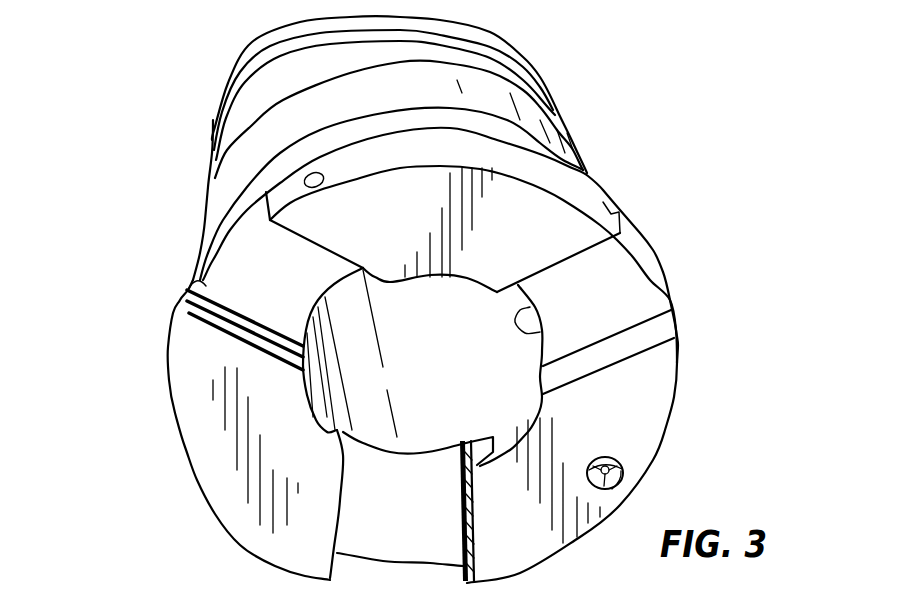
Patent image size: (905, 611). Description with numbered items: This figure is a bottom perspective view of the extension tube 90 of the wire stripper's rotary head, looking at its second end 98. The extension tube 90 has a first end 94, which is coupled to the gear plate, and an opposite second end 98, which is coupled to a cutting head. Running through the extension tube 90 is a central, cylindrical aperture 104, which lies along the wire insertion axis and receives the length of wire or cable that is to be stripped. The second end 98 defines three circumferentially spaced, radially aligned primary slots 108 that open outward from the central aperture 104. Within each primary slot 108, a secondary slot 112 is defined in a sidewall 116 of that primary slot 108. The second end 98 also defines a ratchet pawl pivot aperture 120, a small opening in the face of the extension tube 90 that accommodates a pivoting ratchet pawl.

The extension tube 90 is at (642, 106).
The first end 94 is at (300, 44).
The second end 98 is at (648, 393).
The central cylindrical aperture 104 is at (540, 332).
The primary slot 108 is at (237, 238).
The secondary slot 112 is at (183, 314).
The sidewall 116 is at (193, 290).
The ratchet pawl pivot aperture 120 is at (623, 471).